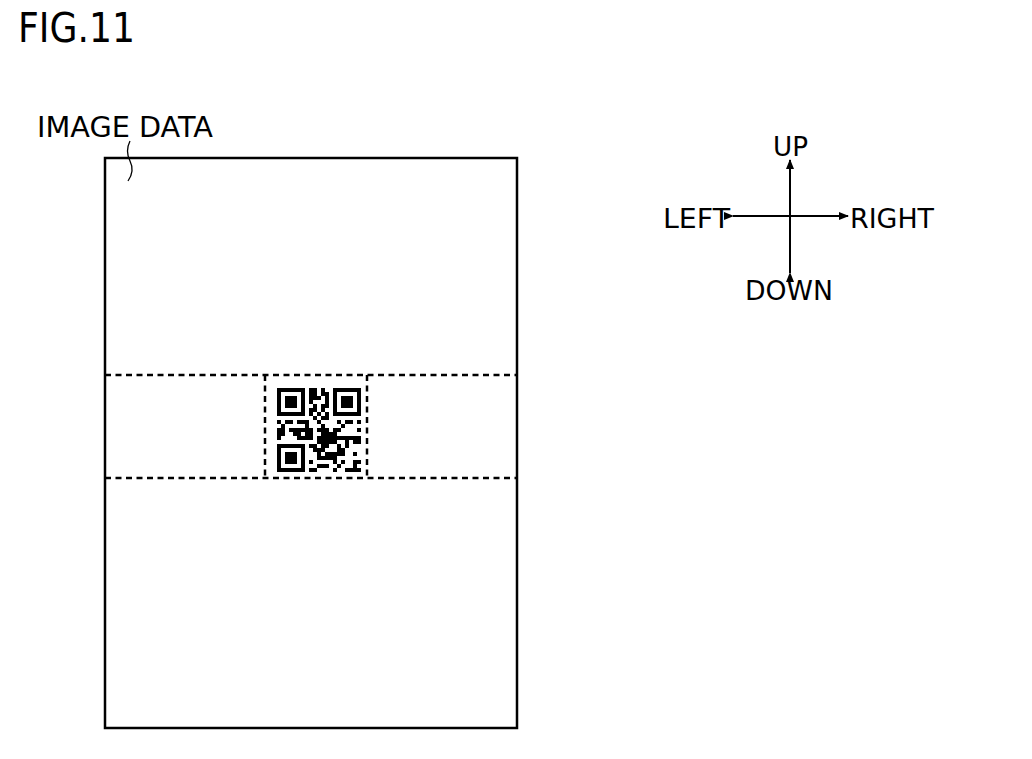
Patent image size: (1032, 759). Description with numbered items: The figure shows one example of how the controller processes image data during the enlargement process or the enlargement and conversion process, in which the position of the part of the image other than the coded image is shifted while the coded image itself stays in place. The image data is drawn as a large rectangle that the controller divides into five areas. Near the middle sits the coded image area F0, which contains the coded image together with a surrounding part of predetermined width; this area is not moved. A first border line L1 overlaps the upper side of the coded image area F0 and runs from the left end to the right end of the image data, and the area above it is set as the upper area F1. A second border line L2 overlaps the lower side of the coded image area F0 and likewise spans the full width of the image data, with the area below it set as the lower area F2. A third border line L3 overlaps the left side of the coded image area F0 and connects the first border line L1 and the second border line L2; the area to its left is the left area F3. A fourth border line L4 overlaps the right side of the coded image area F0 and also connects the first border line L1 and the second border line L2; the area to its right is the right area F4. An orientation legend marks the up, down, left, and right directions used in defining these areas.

The coded image area F0 is at (274, 385).
The upper area F1 is at (505, 251).
The lower area F2 is at (505, 593).
The left area F3 is at (117, 421).
The right area F4 is at (505, 433).
The first border line L1 is at (162, 374).
The second border line L2 is at (442, 479).
The third border line L3 is at (264, 427).
The fourth border line L4 is at (368, 427).